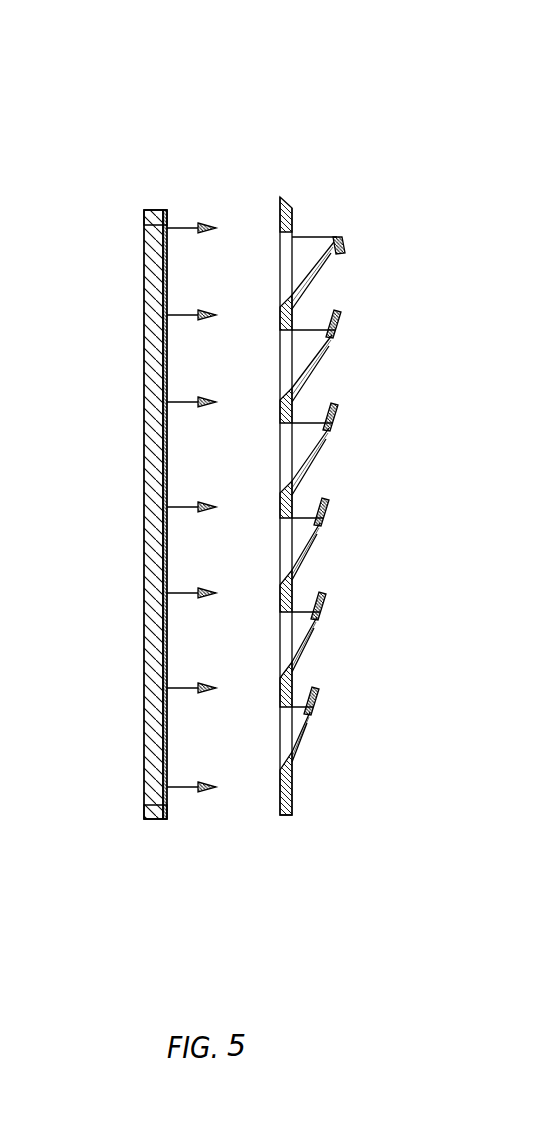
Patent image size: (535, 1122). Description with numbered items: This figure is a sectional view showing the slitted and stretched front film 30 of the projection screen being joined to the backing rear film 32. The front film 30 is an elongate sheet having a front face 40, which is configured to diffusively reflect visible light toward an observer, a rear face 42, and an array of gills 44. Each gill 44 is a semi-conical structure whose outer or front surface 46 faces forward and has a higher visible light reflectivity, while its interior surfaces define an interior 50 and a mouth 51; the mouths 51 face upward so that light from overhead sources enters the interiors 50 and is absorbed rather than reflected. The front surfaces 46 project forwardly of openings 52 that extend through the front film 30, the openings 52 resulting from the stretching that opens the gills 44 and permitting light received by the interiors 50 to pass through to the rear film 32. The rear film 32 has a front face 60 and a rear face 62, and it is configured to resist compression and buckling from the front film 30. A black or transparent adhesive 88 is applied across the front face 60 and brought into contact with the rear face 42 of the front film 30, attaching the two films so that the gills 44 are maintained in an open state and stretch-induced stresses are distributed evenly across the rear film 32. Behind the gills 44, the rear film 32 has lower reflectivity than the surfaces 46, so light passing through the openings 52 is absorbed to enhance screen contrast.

The front film 30 is at (292, 208).
The rear film 32 is at (155, 210).
The front face 40 is at (292, 406).
The rear face 42 is at (278, 224).
The gills 44 is at (387, 230).
The outer or front surface 46 is at (318, 563).
The interior 50 is at (305, 512).
The mouth 51 is at (316, 295).
The openings 52 is at (290, 268).
The front face 60 is at (143, 762).
The rear face 62 is at (143, 648).
The adhesive 88 is at (167, 808).